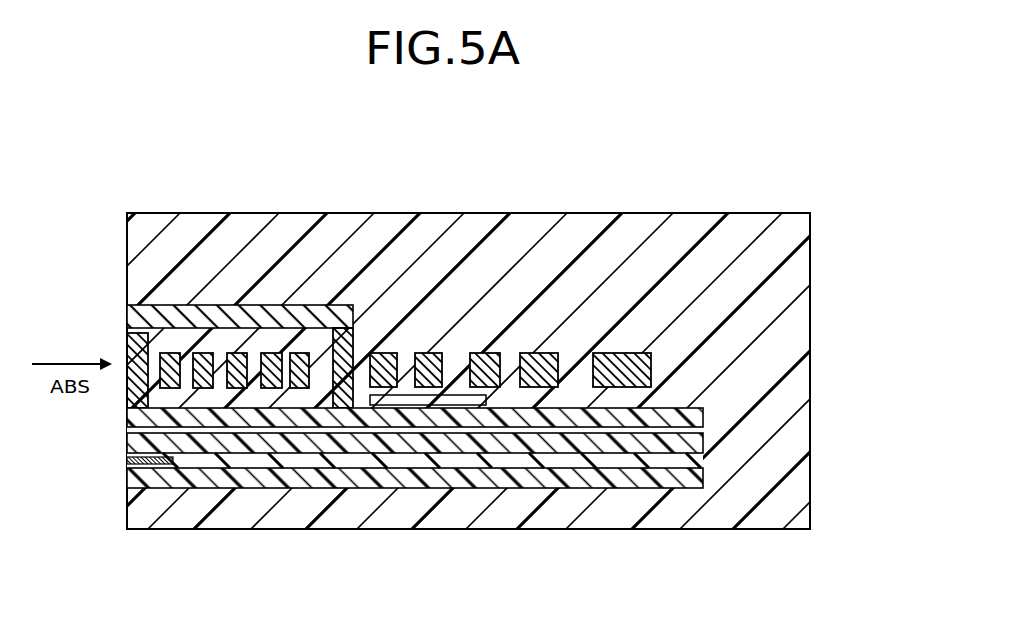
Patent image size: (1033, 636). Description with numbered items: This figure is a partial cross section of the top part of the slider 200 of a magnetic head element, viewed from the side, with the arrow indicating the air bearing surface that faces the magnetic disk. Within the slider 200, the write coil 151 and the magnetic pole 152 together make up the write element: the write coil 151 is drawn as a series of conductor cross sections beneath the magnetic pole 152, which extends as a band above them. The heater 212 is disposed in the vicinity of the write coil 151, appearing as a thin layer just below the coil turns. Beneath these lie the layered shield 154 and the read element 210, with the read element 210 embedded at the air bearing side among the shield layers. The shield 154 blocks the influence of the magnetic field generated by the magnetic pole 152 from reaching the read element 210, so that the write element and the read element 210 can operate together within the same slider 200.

The write coil 151 is at (598, 353).
The magnetic pole 152 is at (236, 305).
The shield 154 is at (703, 438).
The slider 200 is at (728, 213).
The read element 210 is at (130, 463).
The heater 212 is at (487, 399).